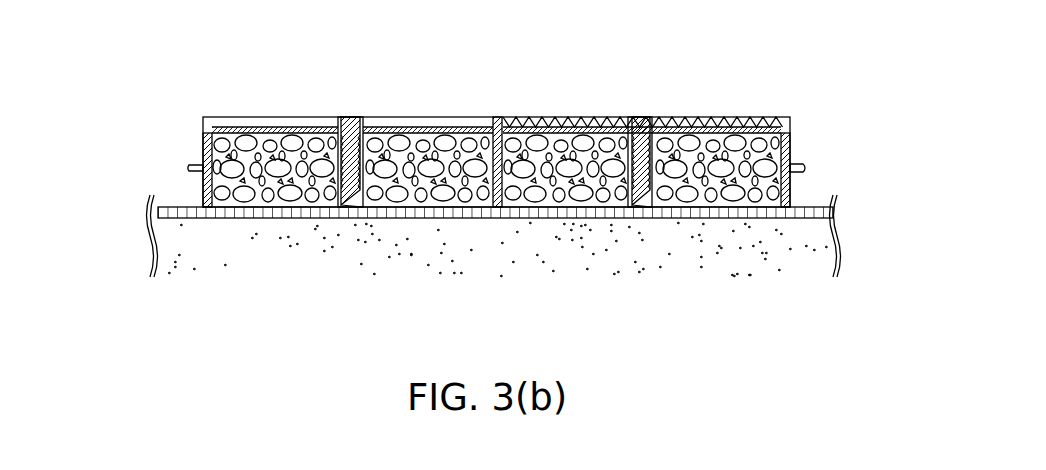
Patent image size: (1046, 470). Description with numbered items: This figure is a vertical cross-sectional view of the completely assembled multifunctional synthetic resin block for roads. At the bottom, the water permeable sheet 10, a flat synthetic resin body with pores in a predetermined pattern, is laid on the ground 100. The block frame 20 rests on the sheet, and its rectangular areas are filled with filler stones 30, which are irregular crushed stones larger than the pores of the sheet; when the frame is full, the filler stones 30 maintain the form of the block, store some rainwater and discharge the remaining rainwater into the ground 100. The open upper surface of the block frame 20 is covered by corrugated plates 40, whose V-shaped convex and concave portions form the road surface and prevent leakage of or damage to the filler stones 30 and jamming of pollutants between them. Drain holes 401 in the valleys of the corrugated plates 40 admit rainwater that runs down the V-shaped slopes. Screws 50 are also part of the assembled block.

The water permeable sheet 10 is at (407, 212).
The block frame 20 is at (792, 140).
The filler stones 30 is at (763, 117).
The corrugated plates 40 is at (715, 130).
The screws 50 is at (647, 117).
The drain holes 401 is at (503, 117).
The ground 100 is at (628, 243).